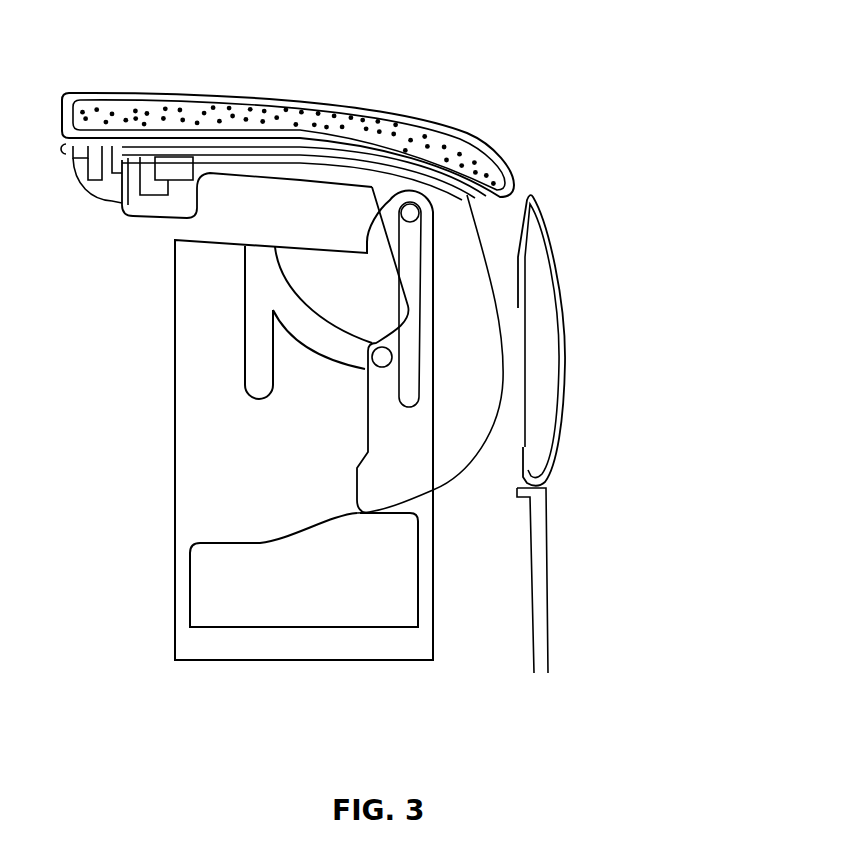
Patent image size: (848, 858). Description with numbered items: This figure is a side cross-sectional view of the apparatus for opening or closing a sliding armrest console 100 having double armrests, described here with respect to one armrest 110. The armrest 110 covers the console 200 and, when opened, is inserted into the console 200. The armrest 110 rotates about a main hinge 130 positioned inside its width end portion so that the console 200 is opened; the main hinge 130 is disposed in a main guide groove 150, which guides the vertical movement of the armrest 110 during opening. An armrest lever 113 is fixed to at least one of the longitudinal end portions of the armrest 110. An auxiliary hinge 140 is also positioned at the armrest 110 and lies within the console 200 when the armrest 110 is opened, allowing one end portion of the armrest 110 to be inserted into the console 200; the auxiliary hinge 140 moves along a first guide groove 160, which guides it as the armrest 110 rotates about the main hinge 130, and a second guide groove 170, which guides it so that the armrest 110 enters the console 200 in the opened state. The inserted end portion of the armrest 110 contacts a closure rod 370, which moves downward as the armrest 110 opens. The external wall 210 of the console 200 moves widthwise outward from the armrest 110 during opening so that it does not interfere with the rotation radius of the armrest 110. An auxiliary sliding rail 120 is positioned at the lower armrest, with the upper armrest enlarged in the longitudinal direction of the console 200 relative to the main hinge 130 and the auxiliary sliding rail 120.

The sliding armrest console 100 is at (278, 53).
The armrest 110 is at (325, 100).
The armrest lever 113 is at (356, 487).
The auxiliary sliding rail 120 is at (165, 187).
The main hinge 130 is at (412, 208).
The auxiliary hinge 140 is at (398, 352).
The main guide groove 150 is at (418, 318).
The first guide groove 160 is at (390, 355).
The second guide groove 170 is at (243, 336).
The console 200 is at (542, 528).
The external wall 210 is at (562, 423).
The closure rod 370 is at (373, 613).